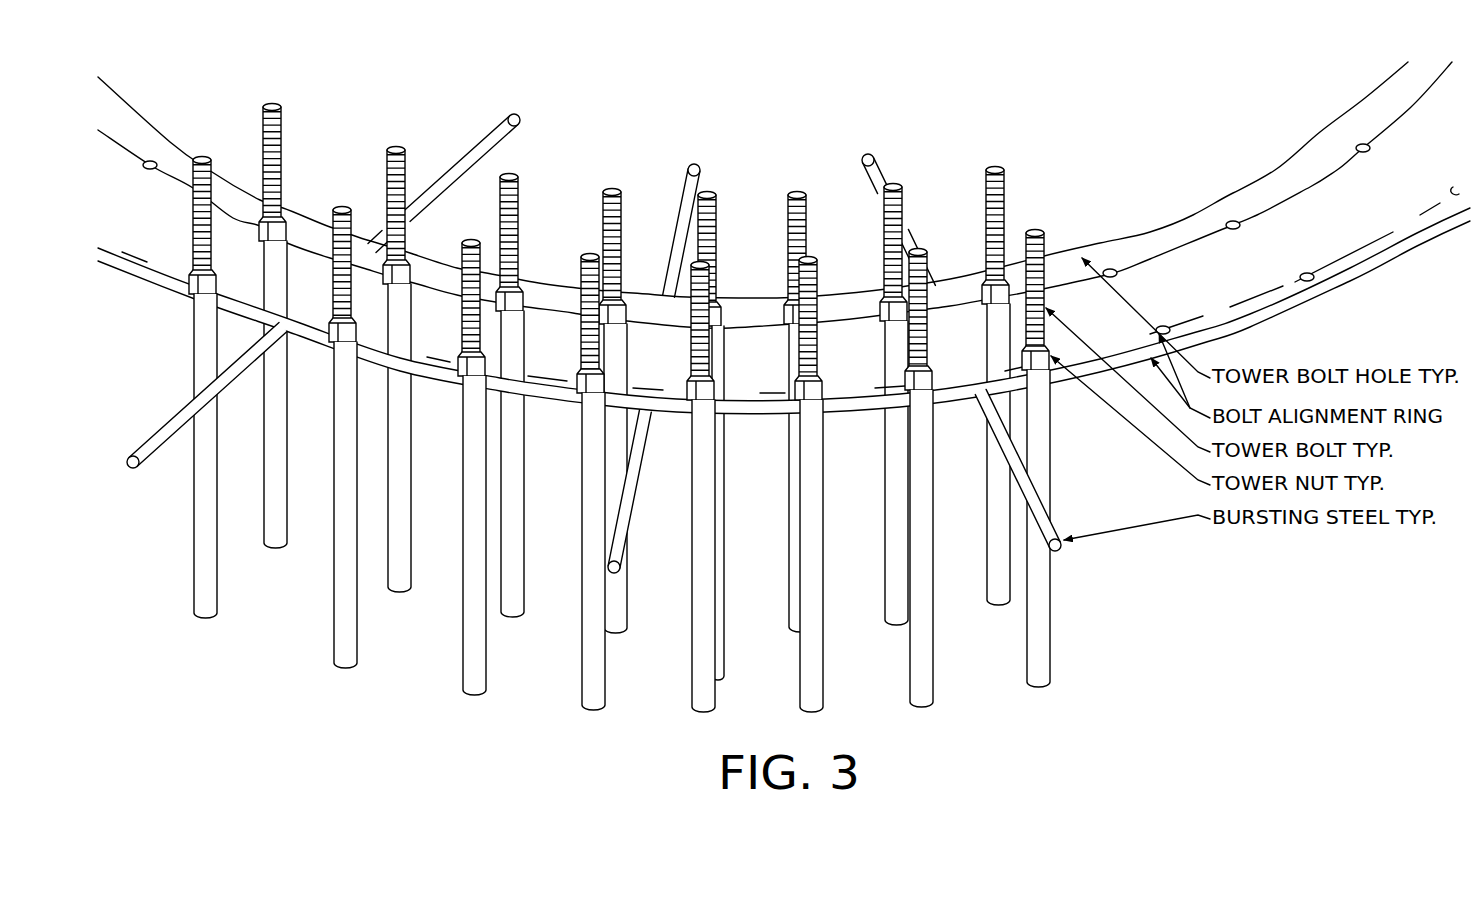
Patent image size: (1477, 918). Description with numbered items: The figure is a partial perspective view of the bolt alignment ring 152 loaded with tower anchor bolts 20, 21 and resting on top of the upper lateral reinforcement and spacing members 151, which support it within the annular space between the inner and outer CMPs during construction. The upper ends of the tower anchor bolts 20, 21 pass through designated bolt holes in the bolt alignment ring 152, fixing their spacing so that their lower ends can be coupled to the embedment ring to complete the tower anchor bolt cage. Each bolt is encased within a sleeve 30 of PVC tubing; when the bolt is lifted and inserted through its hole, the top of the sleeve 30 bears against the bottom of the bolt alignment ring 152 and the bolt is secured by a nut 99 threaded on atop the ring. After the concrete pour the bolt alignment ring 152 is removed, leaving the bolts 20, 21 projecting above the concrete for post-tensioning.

The tower anchor bolt 20 is at (764, 387).
The tower anchor bolt 21 is at (818, 290).
The sleeve 30 is at (1051, 587).
The nut 99 is at (981, 281).
The upper lateral reinforcement and spacing member 151 is at (506, 118).
The bolt alignment ring 152 is at (1184, 226).